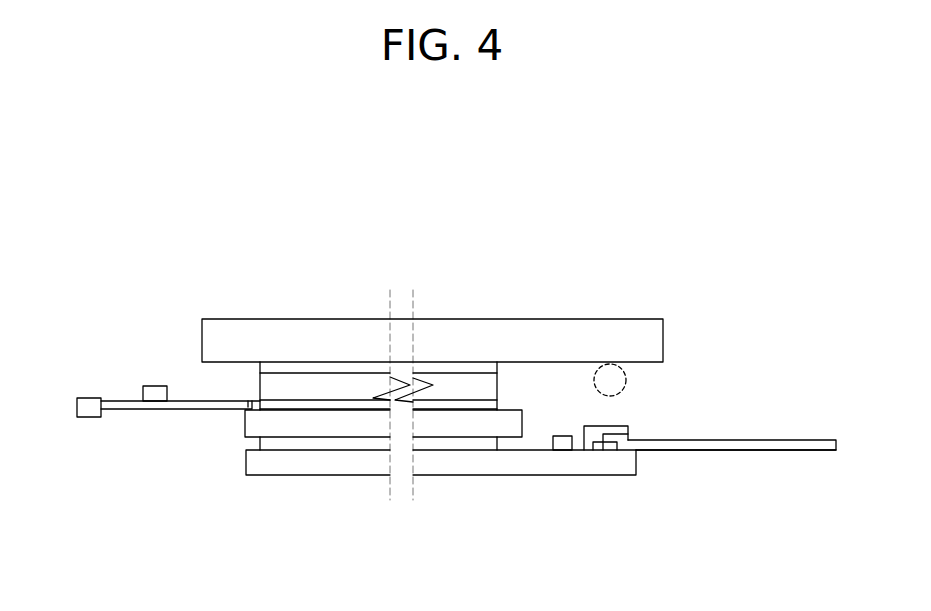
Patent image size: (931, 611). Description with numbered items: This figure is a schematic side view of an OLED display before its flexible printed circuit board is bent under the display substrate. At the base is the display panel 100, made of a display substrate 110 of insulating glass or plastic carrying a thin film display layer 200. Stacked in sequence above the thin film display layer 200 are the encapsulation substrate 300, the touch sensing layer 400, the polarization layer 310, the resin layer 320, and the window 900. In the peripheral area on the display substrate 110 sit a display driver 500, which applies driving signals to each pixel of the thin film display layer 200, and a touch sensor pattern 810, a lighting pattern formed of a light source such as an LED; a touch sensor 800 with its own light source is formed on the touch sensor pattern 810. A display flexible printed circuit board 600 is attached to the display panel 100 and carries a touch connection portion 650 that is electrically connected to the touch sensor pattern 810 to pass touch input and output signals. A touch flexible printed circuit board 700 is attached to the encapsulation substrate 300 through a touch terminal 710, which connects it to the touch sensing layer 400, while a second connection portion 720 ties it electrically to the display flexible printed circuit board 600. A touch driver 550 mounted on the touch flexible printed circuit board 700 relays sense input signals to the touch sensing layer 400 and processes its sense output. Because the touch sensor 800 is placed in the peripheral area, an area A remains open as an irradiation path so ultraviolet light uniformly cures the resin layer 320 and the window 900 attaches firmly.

The display panel 100 is at (540, 502).
The display substrate 110 is at (263, 543).
The thin film display layer 200 is at (278, 442).
The encapsulation substrate 300 is at (359, 317).
The polarization layer 310 is at (355, 385).
The resin layer 320 is at (455, 367).
The touch sensing layer 400 is at (318, 407).
The display driver 500 is at (553, 442).
The touch driver 550 is at (157, 386).
The display flexible printed circuit board 600 is at (703, 466).
The touch connection portion 650 is at (627, 450).
The touch flexible printed circuit board 700 is at (165, 351).
The touch terminal 710 is at (249, 405).
The second connection portion 720 is at (90, 417).
The touch sensor 800 is at (630, 426).
The touch sensor pattern 810 is at (605, 443).
The window 900 is at (522, 340).
The area A is at (593, 382).